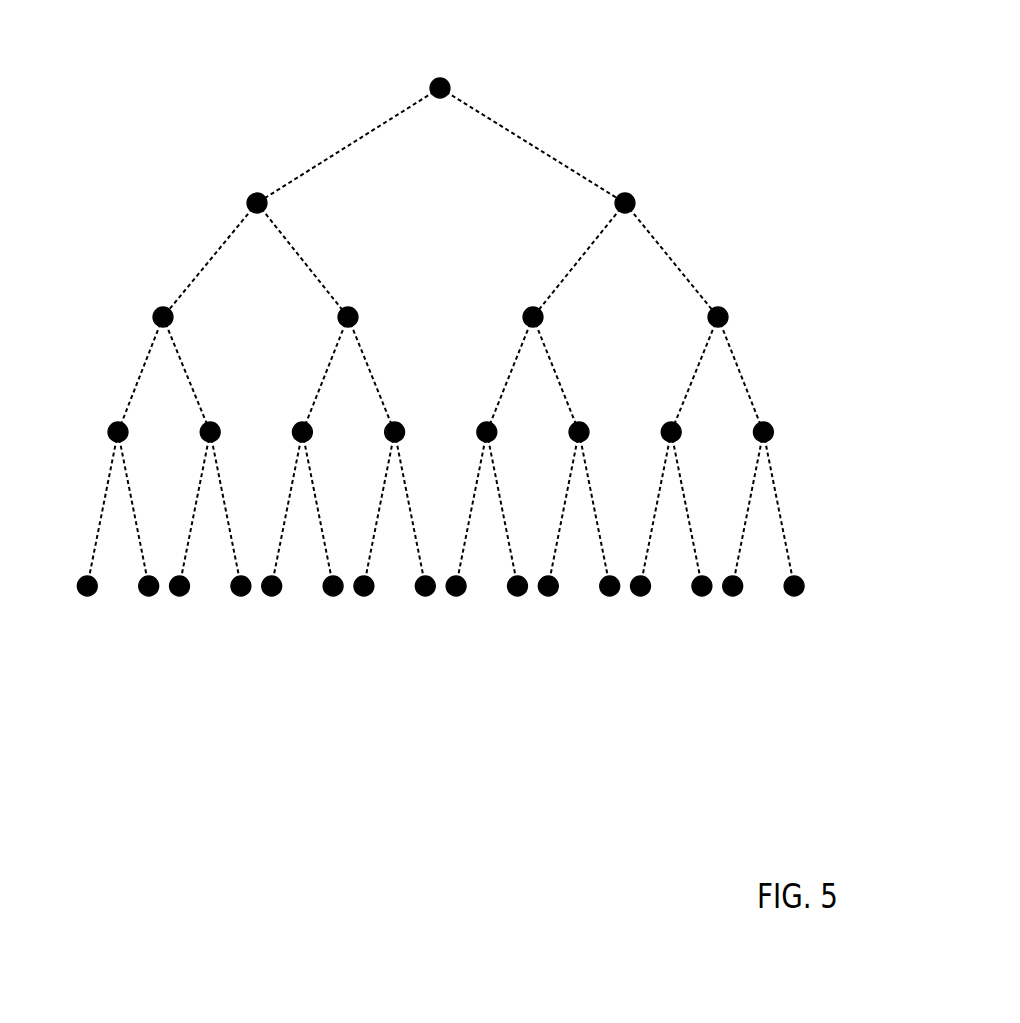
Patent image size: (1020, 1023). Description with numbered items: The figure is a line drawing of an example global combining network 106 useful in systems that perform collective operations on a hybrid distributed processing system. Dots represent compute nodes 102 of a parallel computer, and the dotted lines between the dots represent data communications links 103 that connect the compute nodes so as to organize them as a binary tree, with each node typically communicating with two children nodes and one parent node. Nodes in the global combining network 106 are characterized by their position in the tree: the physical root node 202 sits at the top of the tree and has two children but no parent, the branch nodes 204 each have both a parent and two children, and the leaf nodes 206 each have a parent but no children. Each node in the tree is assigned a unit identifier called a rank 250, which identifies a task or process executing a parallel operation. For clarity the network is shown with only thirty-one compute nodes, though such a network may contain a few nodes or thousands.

The compute nodes 102 is at (517, 595).
The data communications links 103 is at (438, 337).
The global combining network 106 is at (408, 460).
The physical root node 202 is at (578, 61).
The branch nodes 204 is at (817, 152).
The leaf nodes 206 is at (815, 623).
The rank 250 is at (573, 216).